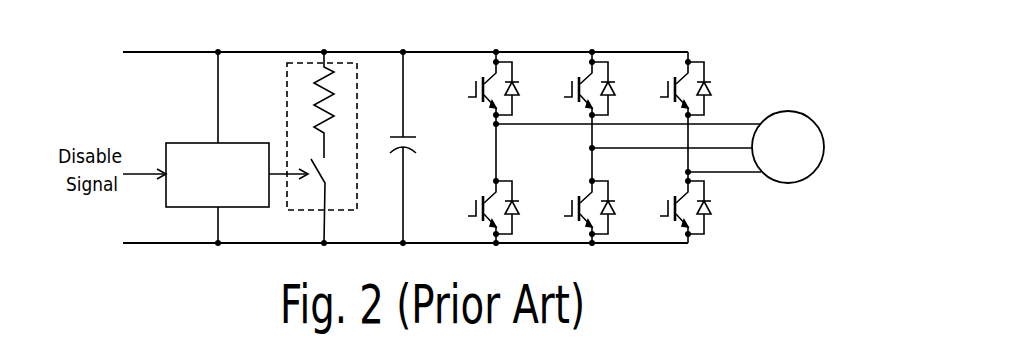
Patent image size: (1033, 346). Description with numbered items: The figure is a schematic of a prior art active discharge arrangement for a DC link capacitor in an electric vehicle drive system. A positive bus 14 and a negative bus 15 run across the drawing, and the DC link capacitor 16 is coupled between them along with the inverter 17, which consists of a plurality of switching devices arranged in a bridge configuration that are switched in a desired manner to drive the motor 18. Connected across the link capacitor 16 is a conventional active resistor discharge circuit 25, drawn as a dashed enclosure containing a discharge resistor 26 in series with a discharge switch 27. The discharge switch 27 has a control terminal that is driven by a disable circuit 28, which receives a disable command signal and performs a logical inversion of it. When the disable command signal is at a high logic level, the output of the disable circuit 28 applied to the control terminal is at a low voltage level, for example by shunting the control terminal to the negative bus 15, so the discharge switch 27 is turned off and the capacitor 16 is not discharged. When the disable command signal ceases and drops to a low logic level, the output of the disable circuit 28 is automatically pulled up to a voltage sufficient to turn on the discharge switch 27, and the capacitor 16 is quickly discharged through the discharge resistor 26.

The positive bus 14 is at (446, 52).
The negative bus 15 is at (441, 243).
The DC link capacitor 16 is at (411, 136).
The inverter 17 is at (638, 46).
The motor 18 is at (788, 111).
The active resistor discharge circuit 25 is at (287, 103).
The discharge resistor 26 is at (332, 93).
The discharge switch 27 is at (327, 179).
The disable circuit 28 is at (190, 143).